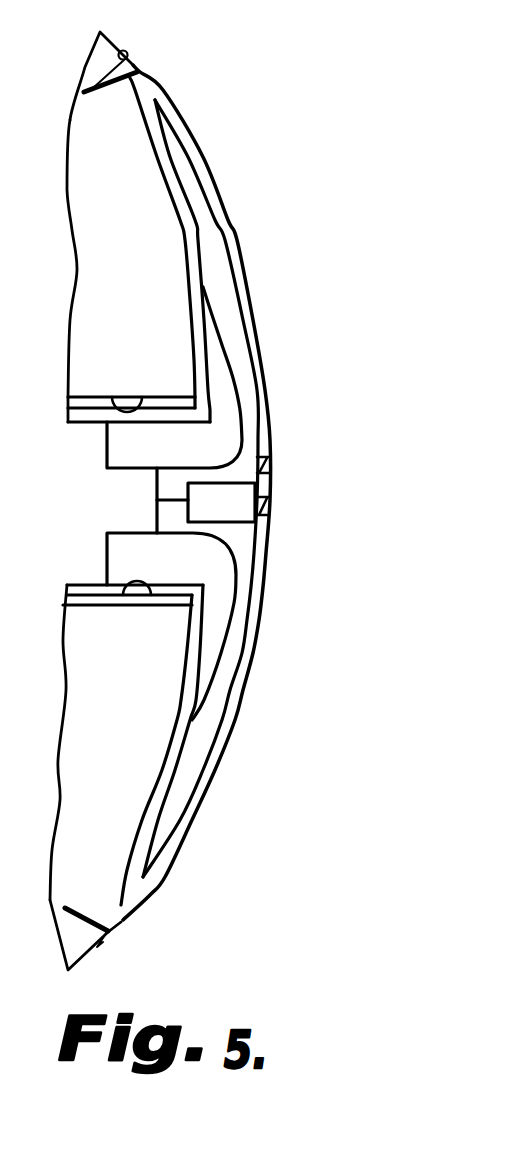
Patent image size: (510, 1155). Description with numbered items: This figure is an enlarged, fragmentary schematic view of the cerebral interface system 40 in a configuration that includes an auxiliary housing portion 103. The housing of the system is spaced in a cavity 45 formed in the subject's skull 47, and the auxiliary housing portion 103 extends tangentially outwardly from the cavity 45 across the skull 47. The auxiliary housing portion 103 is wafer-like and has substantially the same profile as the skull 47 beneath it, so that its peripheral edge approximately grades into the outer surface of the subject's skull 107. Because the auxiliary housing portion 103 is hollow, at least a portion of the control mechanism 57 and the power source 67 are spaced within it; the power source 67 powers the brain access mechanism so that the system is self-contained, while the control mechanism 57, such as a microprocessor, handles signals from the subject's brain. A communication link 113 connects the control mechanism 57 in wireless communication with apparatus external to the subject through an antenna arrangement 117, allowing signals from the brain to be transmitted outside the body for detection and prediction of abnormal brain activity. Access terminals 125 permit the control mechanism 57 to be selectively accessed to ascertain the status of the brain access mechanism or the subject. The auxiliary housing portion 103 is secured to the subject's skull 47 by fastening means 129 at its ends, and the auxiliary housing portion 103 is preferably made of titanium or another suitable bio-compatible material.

The cerebral interface system 40 is at (222, 155).
The cavity 45 is at (140, 397).
The skull 47 is at (127, 308).
The control mechanism 57 is at (170, 457).
The power source 67 is at (167, 568).
The auxiliary housing portion 103 is at (261, 639).
The outer surface of the subject's skull 107 is at (112, 41).
The communication link 113 is at (227, 514).
The antenna arrangement 117 is at (268, 507).
The access terminals 125 is at (268, 462).
The fastening means 129 is at (109, 94).